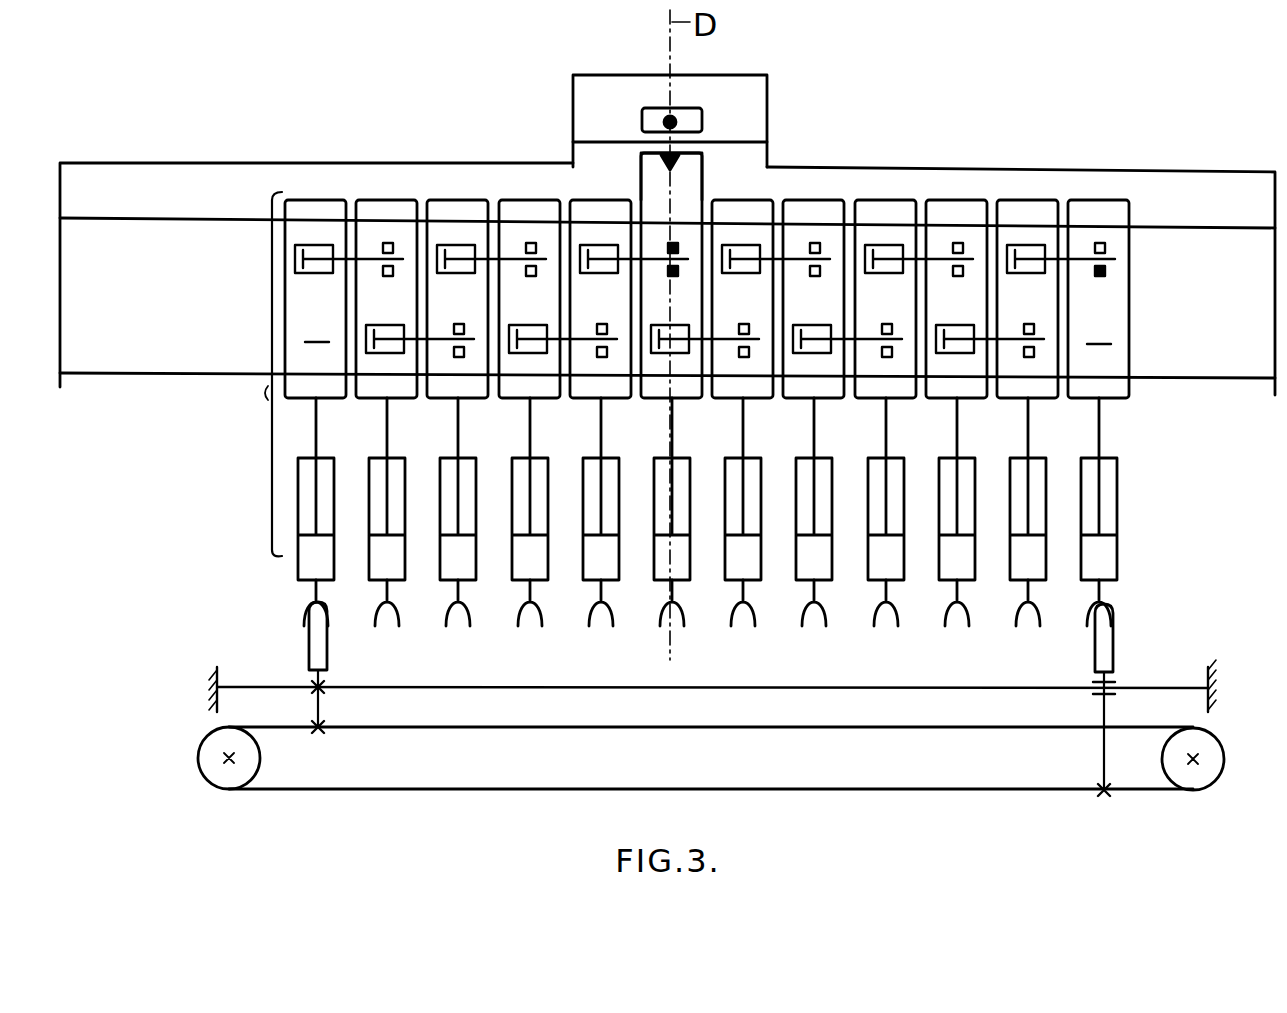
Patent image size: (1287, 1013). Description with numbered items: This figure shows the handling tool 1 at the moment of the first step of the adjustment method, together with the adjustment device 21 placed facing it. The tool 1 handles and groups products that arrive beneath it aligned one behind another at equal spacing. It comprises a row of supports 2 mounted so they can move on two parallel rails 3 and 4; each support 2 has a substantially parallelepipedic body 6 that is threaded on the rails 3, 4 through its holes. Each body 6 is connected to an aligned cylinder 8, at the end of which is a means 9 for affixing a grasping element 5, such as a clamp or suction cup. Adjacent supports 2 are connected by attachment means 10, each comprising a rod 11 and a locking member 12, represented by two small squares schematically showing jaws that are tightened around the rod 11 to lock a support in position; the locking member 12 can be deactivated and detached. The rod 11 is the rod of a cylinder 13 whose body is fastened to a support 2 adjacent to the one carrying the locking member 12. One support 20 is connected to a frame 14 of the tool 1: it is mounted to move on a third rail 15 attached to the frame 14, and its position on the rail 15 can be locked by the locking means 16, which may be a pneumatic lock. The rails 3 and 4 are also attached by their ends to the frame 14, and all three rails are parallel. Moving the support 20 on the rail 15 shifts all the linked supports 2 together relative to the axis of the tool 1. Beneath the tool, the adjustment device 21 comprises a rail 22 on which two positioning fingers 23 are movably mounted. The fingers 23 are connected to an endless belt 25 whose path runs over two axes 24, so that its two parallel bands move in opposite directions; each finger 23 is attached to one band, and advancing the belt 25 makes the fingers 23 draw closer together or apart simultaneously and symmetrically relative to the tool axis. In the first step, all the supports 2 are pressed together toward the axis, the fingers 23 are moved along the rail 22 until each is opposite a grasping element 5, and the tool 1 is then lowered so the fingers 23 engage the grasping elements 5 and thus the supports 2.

The handling tool 1 is at (815, 130).
The support 2 is at (721, 291).
The rail 3 is at (162, 218).
The rail 4 is at (124, 374).
The grasping element 5 is at (739, 628).
The parallelepipedic body 6 is at (708, 323).
The cylinder 8 is at (300, 528).
The affixing means 9 is at (1108, 605).
The attachment means 10 is at (927, 250).
The rod 11 is at (1040, 345).
The locking member 12 is at (1108, 272).
The cylinder 13 is at (1041, 250).
The frame 14 is at (772, 72).
The third rail 15 is at (735, 142).
The locking means 16 is at (667, 173).
The support 20 is at (682, 200).
The adjustment device 21 is at (1182, 665).
The rail 22 is at (468, 687).
The positioning finger 23 is at (316, 647).
The axis 24 is at (226, 758).
The endless belt 25 is at (855, 790).